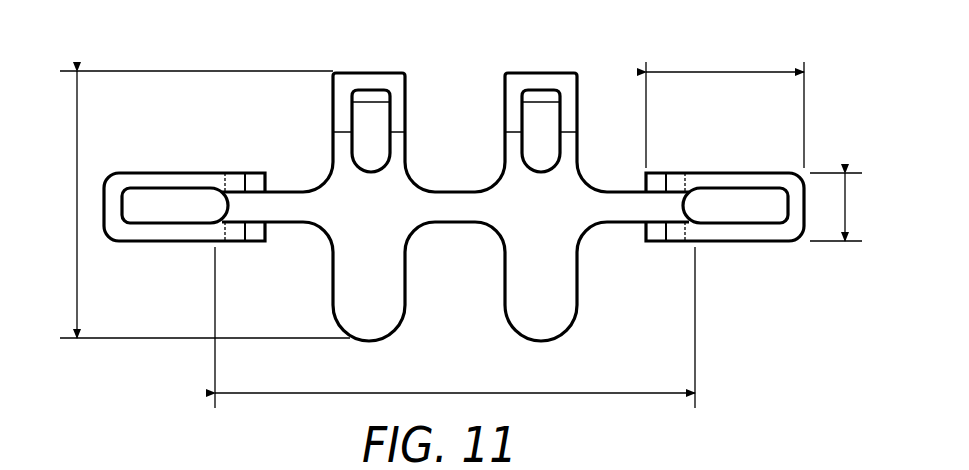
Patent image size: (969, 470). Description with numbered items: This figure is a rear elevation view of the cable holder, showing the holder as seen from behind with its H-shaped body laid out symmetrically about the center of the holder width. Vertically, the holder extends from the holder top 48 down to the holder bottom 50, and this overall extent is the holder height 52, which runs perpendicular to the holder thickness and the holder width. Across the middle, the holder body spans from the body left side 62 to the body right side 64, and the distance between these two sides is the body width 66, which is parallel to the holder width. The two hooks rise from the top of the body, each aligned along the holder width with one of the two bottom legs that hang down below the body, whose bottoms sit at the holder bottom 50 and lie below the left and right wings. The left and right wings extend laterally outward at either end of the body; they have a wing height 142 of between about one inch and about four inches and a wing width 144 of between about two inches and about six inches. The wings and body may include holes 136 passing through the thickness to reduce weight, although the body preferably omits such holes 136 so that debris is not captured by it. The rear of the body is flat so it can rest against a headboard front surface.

The holder top 48 is at (384, 72).
The holder bottom 50 is at (361, 343).
The holder height 52 is at (77, 160).
The body left side 62 is at (228, 206).
The body right side 64 is at (690, 205).
The body width 66 is at (598, 393).
The holes 136 is at (170, 204).
The wing height 142 is at (857, 207).
The wing width 144 is at (725, 72).